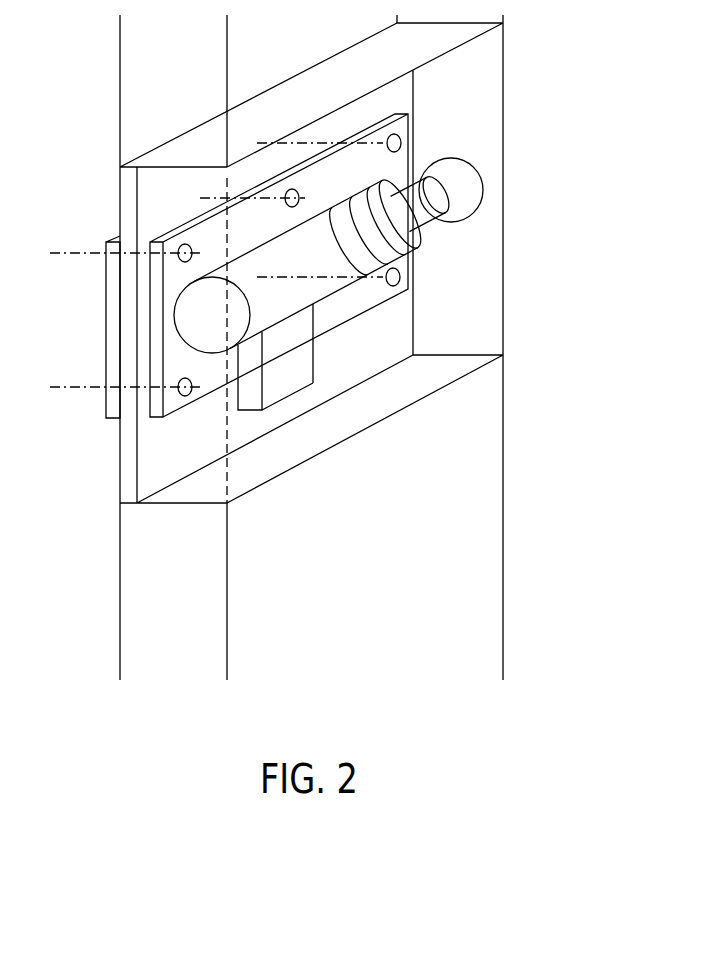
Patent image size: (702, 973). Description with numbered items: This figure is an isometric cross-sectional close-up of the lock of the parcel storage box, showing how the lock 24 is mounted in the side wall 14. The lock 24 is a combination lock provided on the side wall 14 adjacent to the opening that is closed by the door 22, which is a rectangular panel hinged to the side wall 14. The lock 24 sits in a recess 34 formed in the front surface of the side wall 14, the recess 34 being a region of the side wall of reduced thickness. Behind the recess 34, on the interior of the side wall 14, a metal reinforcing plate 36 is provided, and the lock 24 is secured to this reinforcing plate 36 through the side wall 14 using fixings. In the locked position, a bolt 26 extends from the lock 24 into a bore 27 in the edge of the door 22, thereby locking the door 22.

The side wall 14 is at (372, 622).
The door 22 is at (492, 278).
The lock 24 is at (268, 302).
The bolt 26 is at (428, 190).
The bore 27 is at (468, 186).
The recess 34 is at (162, 452).
The reinforcing plate 36 is at (105, 323).